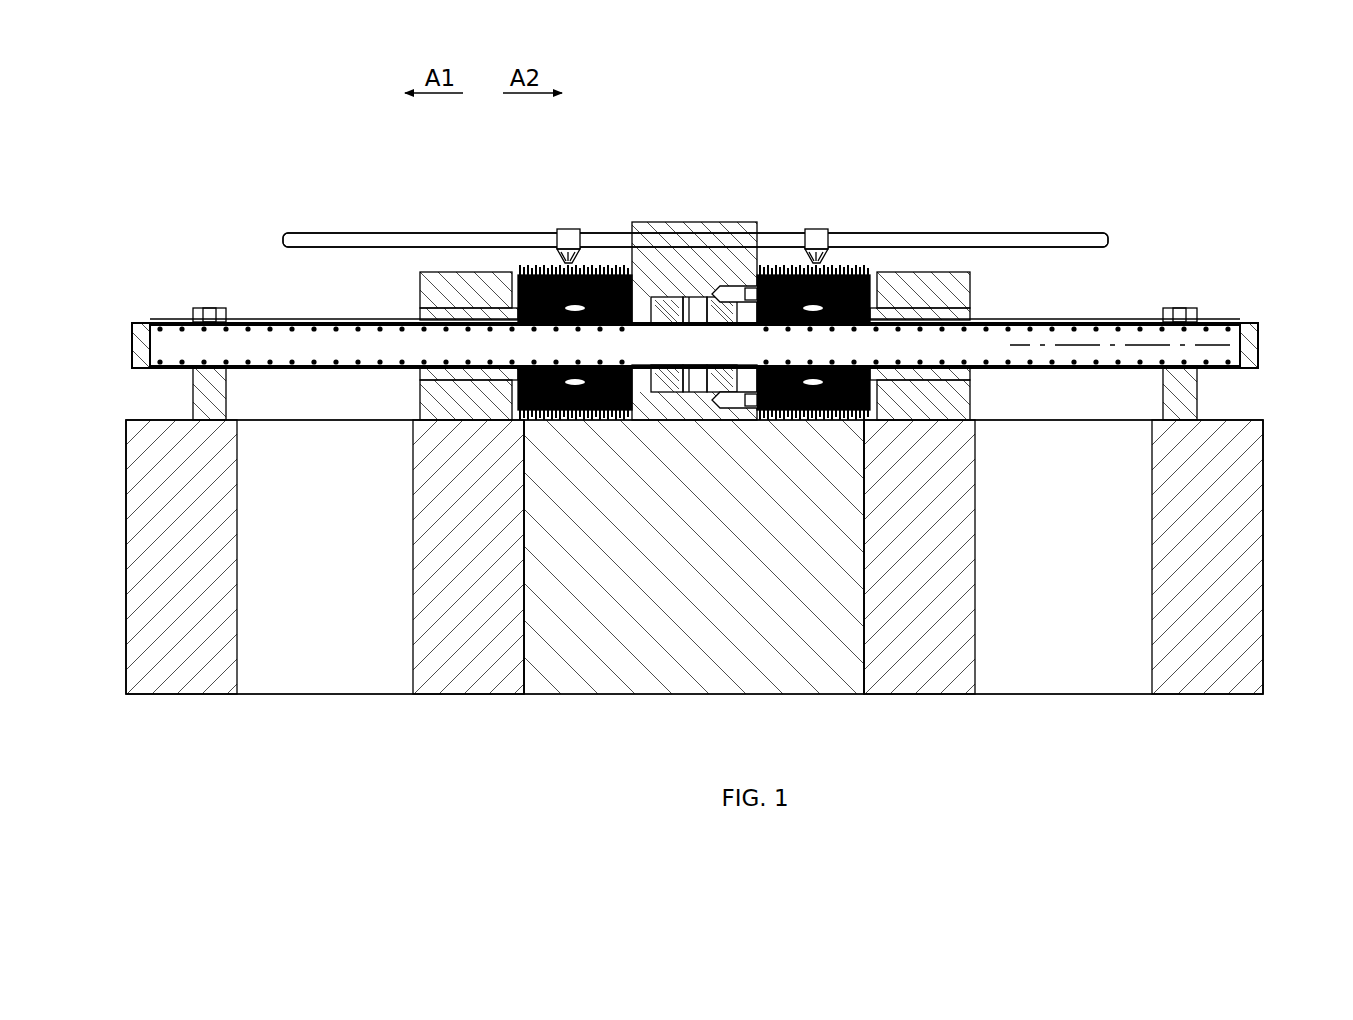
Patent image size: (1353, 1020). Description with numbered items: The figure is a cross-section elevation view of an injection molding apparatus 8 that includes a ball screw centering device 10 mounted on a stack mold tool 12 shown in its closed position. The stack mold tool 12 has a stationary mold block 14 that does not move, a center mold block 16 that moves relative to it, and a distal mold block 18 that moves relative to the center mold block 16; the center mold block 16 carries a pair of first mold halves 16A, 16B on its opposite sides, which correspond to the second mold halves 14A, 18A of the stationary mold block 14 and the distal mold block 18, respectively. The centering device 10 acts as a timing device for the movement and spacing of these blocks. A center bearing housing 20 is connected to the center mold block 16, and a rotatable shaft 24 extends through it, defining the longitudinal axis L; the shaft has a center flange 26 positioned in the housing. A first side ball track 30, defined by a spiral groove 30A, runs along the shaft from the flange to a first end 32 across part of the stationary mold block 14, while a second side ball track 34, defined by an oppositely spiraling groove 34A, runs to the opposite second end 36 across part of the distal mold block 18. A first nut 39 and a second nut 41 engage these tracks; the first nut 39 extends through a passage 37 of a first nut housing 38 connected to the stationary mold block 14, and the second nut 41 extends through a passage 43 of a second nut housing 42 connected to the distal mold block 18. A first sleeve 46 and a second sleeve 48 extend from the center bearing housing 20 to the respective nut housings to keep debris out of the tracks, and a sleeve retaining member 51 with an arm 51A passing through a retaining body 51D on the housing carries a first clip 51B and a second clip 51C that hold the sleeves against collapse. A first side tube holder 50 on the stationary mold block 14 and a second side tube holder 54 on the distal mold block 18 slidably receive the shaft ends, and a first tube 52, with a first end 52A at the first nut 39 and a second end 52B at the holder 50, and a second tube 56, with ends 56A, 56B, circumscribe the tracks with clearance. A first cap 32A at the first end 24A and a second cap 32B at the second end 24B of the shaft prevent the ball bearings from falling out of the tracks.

The injection molding apparatus 8 is at (287, 165).
The ball screw centering device 10 is at (1128, 232).
The stack mold tool 12 is at (1272, 458).
The stationary mold block 14 is at (1263, 705).
The second mold half 14A is at (868, 554).
The center mold block 16 is at (658, 676).
The first mold half 16A is at (868, 605).
The first mold half 16B is at (520, 605).
The distal mold block 18 is at (126, 705).
The second mold half 18A is at (522, 554).
The center bearing housing 20 is at (675, 290).
The rotatable shaft 24 is at (1117, 325).
The first end of the rotatable shaft 24A is at (1252, 352).
The second end of the rotatable shaft 24B is at (140, 340).
The center flange 26 is at (694, 318).
The first side ball track 30 is at (1072, 326).
The spiral groove 30A is at (1058, 322).
The first end of the rotatable shaft 32 is at (1133, 370).
The first cap 32A is at (1252, 362).
The second cap 32B is at (140, 360).
The second side ball track 34 is at (265, 326).
The spiral groove 34A is at (342, 328).
The second end of the rotatable shaft 36 is at (140, 346).
The passage 37 is at (968, 312).
The first nut housing 38 is at (913, 278).
The first nut 39 is at (960, 380).
The second nut 41 is at (432, 378).
The second nut housing 42 is at (455, 276).
The passage 43 is at (425, 314).
The first sleeve 46 is at (810, 422).
The second sleeve 48 is at (582, 422).
The first side tube holder 50 is at (1182, 408).
The sleeve retaining member 51 is at (942, 222).
The arm 51A is at (1008, 233).
The first clip 51B is at (828, 252).
The second clip 51C is at (580, 252).
The retaining body 51D is at (690, 222).
The first tube 52 is at (1222, 326).
The first end of the first tube 52A is at (908, 328).
The second end of the first tube 52B is at (1248, 332).
The second side tube holder 54 is at (203, 408).
The second tube 56 is at (150, 326).
The first end of the second tube 56A is at (495, 328).
The second end of the second tube 56B is at (150, 330).
The longitudinal axis L is at (1012, 345).